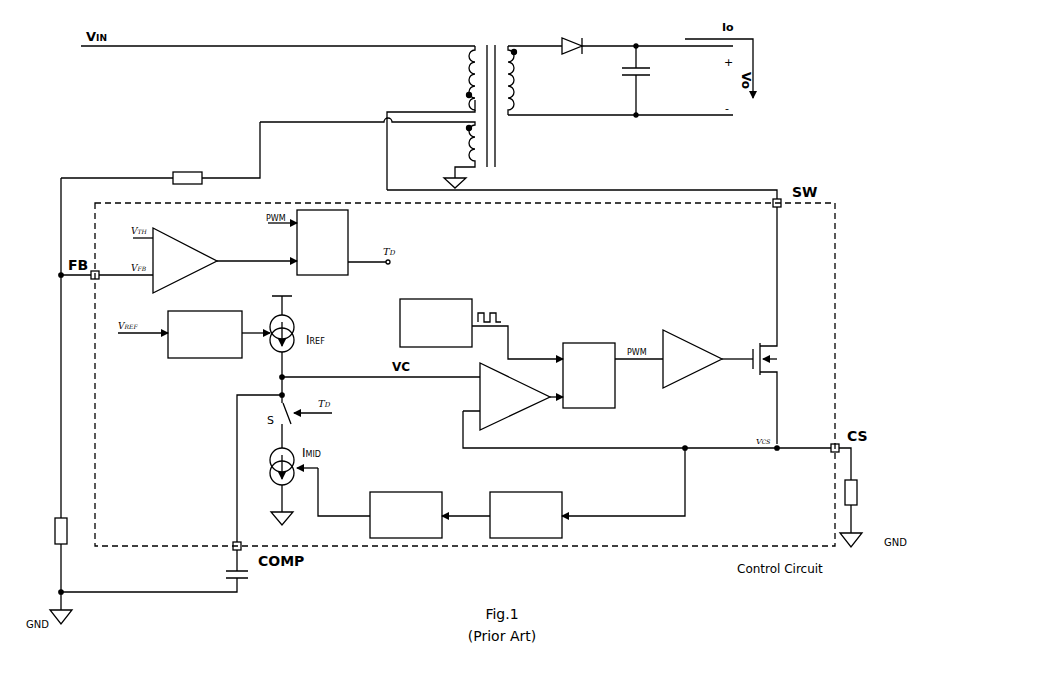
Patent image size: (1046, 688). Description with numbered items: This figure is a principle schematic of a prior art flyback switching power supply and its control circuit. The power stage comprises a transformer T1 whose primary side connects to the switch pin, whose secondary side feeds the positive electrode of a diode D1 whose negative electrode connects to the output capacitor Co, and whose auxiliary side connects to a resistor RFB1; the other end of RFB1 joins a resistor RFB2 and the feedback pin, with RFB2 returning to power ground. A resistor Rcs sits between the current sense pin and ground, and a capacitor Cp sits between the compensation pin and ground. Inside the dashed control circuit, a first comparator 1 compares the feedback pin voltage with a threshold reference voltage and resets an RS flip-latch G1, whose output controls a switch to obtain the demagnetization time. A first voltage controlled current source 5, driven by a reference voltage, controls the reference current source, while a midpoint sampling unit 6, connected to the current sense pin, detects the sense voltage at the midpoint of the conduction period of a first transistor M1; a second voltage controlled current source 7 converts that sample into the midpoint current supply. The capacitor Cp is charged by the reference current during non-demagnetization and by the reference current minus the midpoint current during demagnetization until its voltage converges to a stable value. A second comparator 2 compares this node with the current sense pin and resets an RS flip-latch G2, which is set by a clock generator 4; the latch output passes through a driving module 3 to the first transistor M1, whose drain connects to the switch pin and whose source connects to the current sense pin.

The first comparator 1 is at (185, 260).
The second comparator 2 is at (515, 396).
The driving module 3 is at (205, 334).
The clock generator 4 is at (436, 323).
The first voltage controlled current source 5 is at (692, 359).
The midpoint sampling unit 6 is at (526, 515).
The second voltage controlled current source 7 is at (406, 515).
The RS flip-latch G1 is at (322, 242).
The RS flip-latch G2 is at (589, 375).
The first transistor M1 is at (787, 325).
The transformer T1 is at (399, 117).
The diode D1 is at (574, 53).
The output capacitor Co is at (633, 80).
The capacitor Cp is at (250, 573).
The resistor Rcs is at (860, 497).
The resistor RFB1 is at (160, 153).
The resistor RFB2 is at (51, 394).